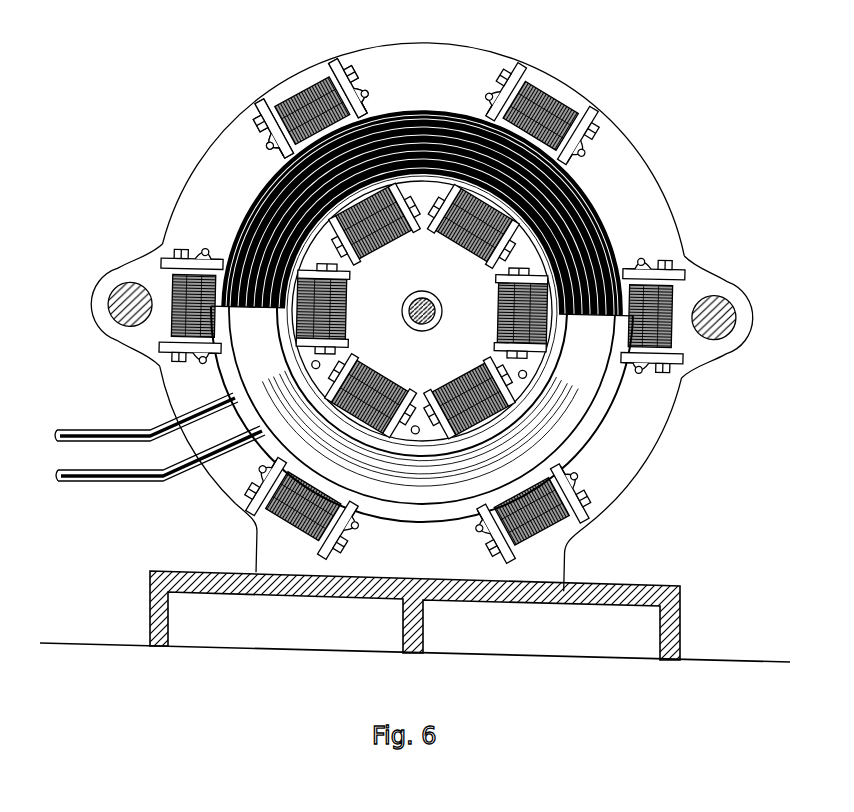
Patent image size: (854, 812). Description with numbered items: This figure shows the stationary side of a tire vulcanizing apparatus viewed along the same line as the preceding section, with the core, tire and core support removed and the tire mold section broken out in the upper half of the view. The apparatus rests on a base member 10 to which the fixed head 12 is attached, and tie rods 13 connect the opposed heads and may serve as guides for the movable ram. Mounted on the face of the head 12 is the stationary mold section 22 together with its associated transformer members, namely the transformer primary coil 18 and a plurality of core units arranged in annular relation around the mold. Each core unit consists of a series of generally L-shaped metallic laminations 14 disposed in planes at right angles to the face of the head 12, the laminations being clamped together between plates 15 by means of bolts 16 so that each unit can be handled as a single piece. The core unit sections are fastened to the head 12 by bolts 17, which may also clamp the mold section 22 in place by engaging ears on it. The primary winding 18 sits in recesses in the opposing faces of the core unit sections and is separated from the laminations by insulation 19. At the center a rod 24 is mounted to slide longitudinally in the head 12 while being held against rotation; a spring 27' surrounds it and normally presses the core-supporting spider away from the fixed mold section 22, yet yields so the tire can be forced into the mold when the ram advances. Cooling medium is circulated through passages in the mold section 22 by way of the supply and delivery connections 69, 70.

The base member 10 is at (600, 594).
The fixed head 12 is at (166, 371).
The tie rods 13 is at (109, 321).
The laminations 14 is at (303, 90).
The plates 15 is at (336, 62).
The bolts 16 is at (349, 76).
The bolts 17 is at (366, 100).
The transformer primary coil 18 is at (586, 194).
The insulation 19 is at (601, 220).
The mold section 22 is at (586, 398).
The rod 24 is at (431, 301).
The spring 27' is at (436, 330).
The supply connection 69 is at (107, 481).
The delivery connection 70 is at (68, 442).